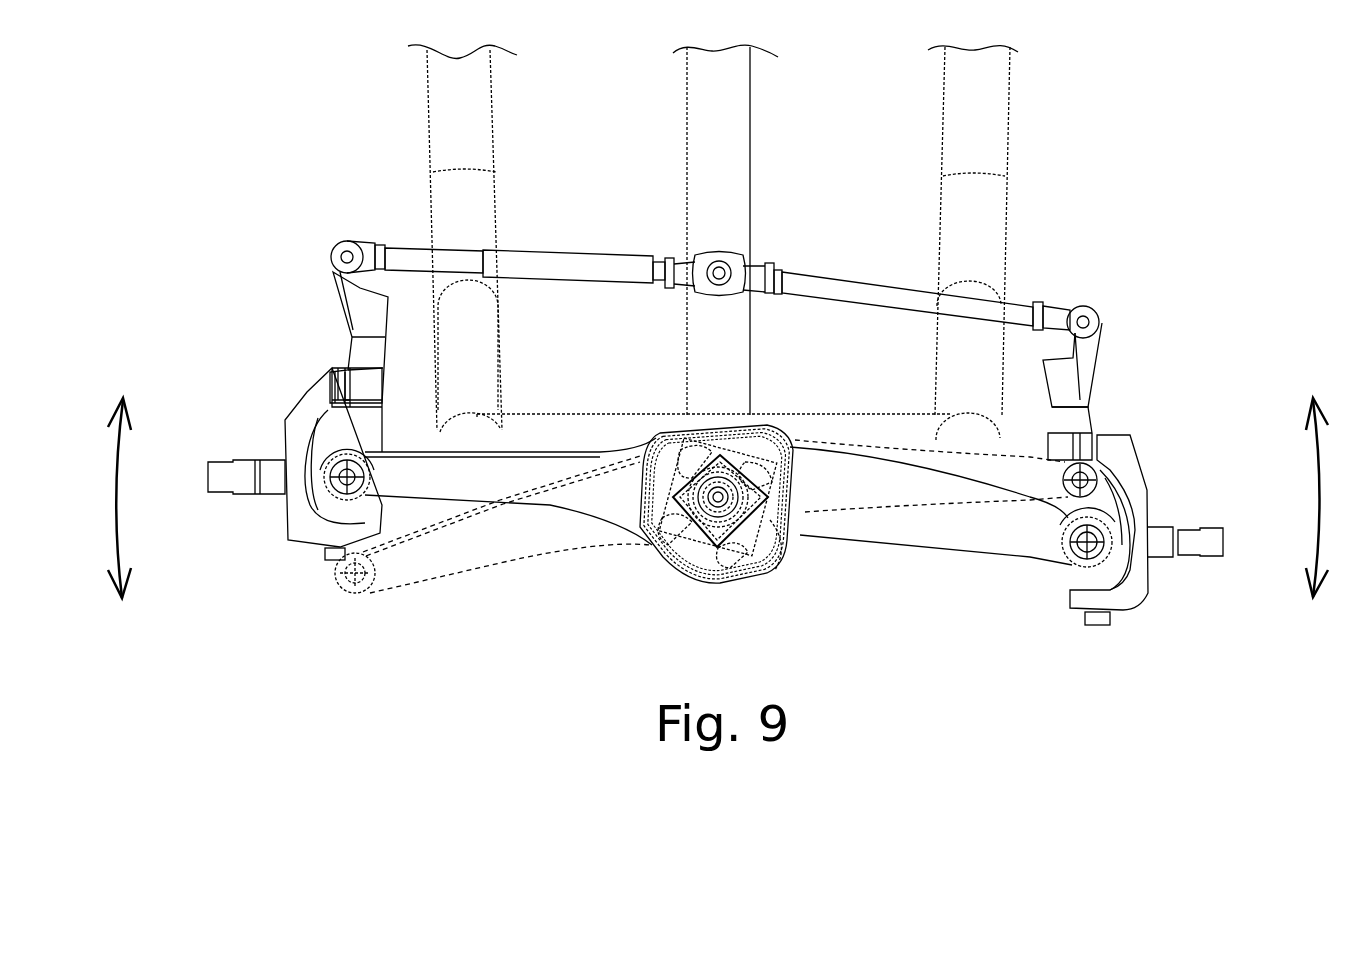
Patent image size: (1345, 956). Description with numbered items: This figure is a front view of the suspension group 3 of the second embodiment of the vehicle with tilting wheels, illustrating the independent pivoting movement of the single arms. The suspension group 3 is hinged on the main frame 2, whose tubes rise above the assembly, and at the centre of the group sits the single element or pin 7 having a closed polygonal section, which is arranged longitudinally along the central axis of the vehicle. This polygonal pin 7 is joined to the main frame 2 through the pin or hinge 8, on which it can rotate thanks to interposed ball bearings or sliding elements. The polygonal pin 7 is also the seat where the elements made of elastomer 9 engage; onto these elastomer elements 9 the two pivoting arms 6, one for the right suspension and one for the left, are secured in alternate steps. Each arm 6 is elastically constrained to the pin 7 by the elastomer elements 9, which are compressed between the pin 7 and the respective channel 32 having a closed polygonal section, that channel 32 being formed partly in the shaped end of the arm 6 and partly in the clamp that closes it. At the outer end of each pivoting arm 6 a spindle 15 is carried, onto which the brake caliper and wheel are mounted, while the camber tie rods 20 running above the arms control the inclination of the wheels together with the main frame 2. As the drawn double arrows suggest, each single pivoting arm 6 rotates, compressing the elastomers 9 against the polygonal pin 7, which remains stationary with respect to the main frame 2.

The main frame 2 is at (980, 132).
The camber tie rods 20 is at (812, 280).
The spindle 15 is at (293, 410).
The pivoting arms 6 is at (460, 477).
The suspension group 3 is at (597, 579).
The channel having a closed polygonal section 32 is at (763, 540).
The single element or pin having a closed polygonal section 7 is at (753, 498).
The elements made of elastomer 9 is at (758, 473).
The pin or hinge 8 is at (718, 500).